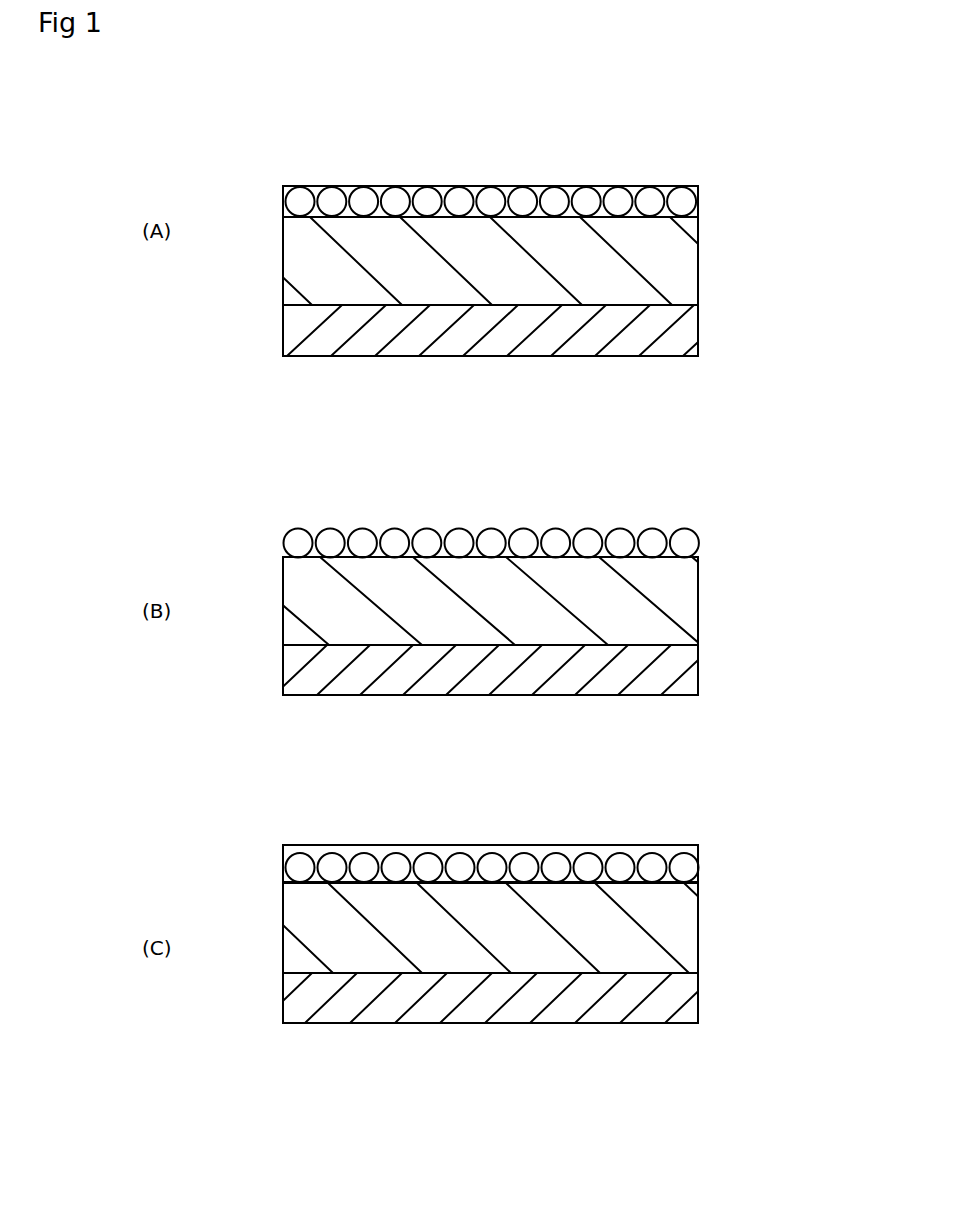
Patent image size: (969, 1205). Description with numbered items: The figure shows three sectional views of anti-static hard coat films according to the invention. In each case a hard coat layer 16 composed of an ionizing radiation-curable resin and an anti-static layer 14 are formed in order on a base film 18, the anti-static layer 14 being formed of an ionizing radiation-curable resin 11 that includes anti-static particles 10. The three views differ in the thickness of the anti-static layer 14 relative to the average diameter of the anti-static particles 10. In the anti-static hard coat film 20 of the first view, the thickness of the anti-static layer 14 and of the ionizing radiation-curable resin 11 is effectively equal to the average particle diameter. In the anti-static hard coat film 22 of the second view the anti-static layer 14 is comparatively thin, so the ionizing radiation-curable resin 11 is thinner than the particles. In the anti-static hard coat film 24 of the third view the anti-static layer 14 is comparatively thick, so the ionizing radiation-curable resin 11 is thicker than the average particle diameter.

The anti-static particles 10 is at (683, 198).
The ionizing radiation-curable resin 11 is at (688, 219).
The anti-static layer 14 is at (783, 157).
The hard coat layer 16 is at (678, 268).
The base film 18 is at (682, 322).
The anti-static hard coat film 20 is at (840, 175).
The anti-static hard coat film 22 is at (840, 515).
The anti-static hard coat film 24 is at (840, 840).